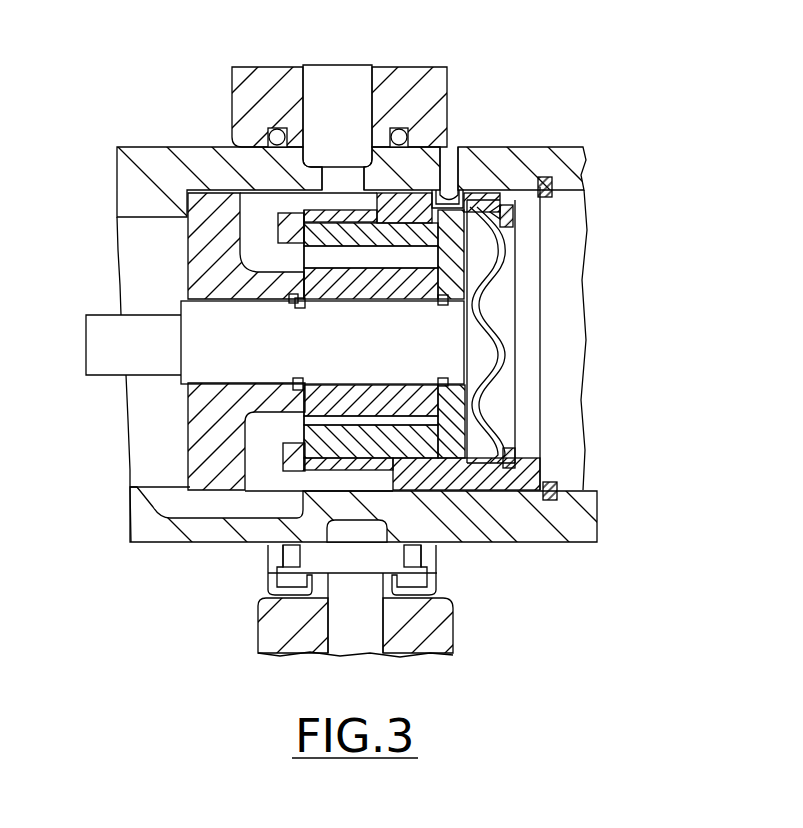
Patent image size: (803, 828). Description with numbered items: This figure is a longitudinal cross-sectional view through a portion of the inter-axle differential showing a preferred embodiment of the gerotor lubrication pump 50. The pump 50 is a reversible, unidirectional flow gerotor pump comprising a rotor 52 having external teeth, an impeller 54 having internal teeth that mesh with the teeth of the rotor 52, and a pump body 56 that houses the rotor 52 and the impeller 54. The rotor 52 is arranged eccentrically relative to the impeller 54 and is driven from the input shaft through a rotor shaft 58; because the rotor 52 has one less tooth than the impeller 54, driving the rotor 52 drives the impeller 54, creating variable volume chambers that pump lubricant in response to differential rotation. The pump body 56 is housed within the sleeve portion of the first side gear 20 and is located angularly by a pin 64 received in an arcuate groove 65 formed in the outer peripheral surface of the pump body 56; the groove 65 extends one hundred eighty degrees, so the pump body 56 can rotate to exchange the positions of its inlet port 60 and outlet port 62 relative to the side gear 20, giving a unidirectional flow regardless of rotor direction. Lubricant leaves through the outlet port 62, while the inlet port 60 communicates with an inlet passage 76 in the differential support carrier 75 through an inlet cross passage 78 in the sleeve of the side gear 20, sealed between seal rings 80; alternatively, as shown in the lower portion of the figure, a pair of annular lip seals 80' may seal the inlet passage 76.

The first side gear 20 is at (530, 163).
The gerotor pump 50 is at (543, 253).
The rotor 52 is at (333, 294).
The impeller 54 is at (423, 450).
The pump body 56 is at (196, 240).
The rotor shaft 58 is at (110, 367).
The inlet port 60 is at (252, 210).
The outlet port 62 is at (277, 432).
The pin 64 is at (445, 147).
The arcuate groove 65 is at (477, 143).
The differential support carrier 75 is at (420, 68).
The inlet passage 76 is at (353, 70).
The inlet cross passage 78 is at (337, 180).
The seal rings 80 is at (331, 85).
The annular lip seals 80' is at (391, 581).